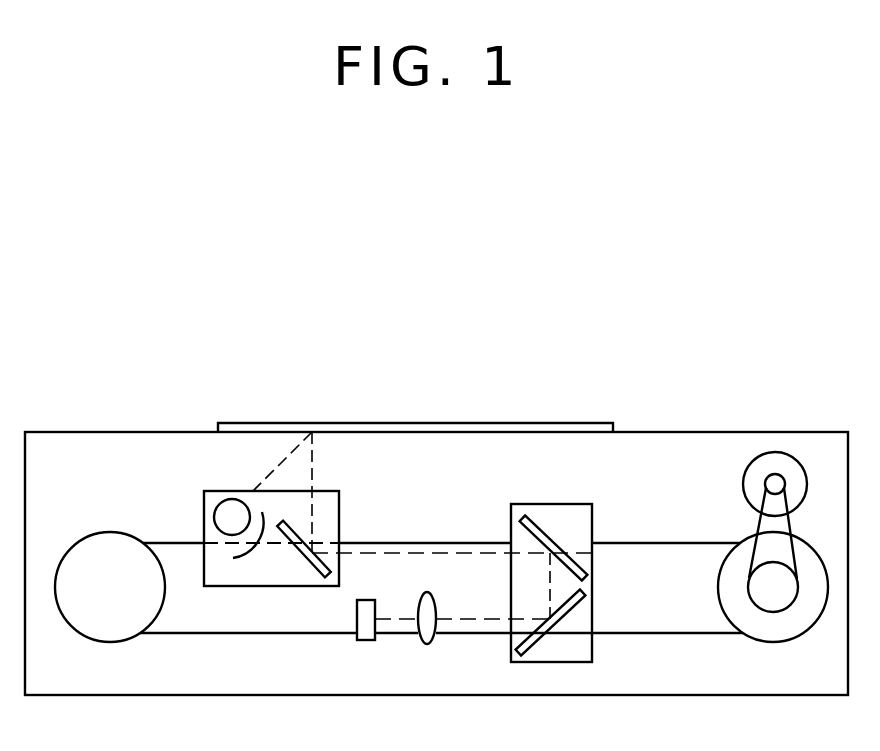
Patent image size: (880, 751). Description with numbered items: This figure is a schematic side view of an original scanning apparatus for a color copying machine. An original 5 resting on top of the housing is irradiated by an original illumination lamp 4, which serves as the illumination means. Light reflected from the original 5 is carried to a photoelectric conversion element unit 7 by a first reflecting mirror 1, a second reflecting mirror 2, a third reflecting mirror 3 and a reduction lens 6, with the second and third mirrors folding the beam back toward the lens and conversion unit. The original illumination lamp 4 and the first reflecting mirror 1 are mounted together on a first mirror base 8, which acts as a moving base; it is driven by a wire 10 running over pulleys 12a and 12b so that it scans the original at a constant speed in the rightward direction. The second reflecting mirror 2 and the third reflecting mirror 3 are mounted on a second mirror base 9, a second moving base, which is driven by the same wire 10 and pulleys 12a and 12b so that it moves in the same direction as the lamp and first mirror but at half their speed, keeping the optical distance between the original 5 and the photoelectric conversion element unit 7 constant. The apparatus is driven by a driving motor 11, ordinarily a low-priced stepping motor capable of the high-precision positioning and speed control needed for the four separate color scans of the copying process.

The first reflecting mirror 1 is at (303, 552).
The second reflecting mirror 2 is at (552, 530).
The third reflecting mirror 3 is at (580, 640).
The original illumination lamp 4 is at (217, 495).
The original 5 is at (465, 423).
The reduction lens 6 is at (434, 643).
The photoelectric conversion element unit 7 is at (369, 641).
The first mirror base 8 is at (339, 512).
The second mirror base 9 is at (592, 582).
The wire 10 is at (690, 543).
The driving motor 11 is at (772, 455).
The pulley 12a is at (80, 542).
The pulley 12b is at (755, 640).